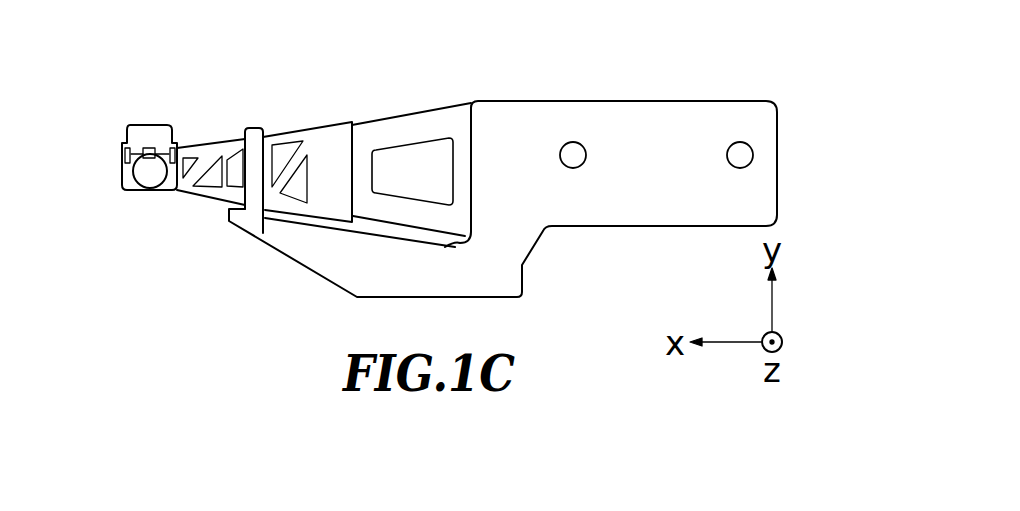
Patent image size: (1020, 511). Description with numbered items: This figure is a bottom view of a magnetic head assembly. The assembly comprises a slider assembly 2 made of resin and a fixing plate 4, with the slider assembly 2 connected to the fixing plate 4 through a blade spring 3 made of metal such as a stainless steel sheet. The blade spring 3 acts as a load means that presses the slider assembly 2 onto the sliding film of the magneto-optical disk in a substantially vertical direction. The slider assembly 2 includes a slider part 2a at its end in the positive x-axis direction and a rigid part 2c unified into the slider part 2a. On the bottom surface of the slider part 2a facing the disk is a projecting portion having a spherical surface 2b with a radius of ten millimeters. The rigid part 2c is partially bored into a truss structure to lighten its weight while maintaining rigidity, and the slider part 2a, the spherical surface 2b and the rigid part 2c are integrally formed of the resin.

The slider assembly 2 is at (208, 141).
The slider part 2a is at (143, 123).
The spherical surface 2b is at (150, 188).
The rigid part 2c is at (305, 123).
The blade spring 3 is at (400, 115).
The fixing plate 4 is at (662, 98).